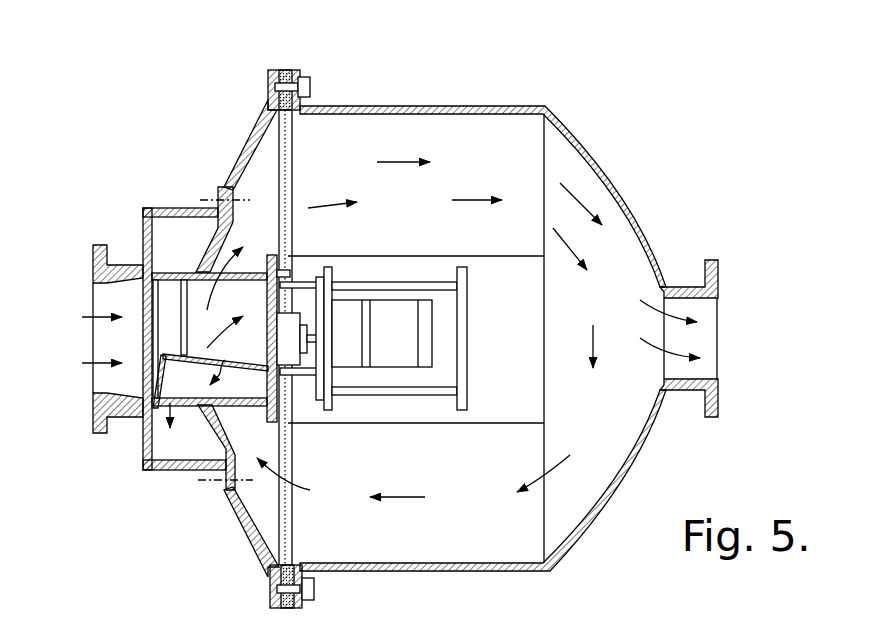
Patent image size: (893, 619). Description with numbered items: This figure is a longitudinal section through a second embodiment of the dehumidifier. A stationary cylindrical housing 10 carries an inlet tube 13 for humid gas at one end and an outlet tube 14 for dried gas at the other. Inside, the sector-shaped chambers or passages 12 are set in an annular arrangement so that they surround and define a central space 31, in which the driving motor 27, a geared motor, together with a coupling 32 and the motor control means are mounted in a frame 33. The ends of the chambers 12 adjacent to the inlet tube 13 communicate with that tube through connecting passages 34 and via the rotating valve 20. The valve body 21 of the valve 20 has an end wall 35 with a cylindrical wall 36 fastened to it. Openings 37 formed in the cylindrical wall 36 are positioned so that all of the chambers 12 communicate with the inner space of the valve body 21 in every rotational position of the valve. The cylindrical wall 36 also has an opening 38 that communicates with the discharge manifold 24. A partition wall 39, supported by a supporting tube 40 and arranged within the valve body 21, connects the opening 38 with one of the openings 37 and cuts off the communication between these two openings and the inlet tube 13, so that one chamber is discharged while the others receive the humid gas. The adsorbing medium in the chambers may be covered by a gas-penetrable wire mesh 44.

The housing 10 is at (507, 108).
The sector-shaped chambers 12 is at (428, 137).
The inlet tube 13 is at (117, 265).
The outlet tube 14 is at (690, 287).
The rotating valve 20 is at (177, 420).
The valve body 21 is at (203, 420).
The discharge manifold 24 is at (188, 273).
The driving motor 27 is at (382, 312).
The central space 31 is at (367, 415).
The coupling 32 is at (296, 322).
The frame 33 is at (428, 290).
The connecting passages 34 is at (255, 155).
The end wall 35 is at (268, 303).
The cylindrical wall 36 is at (160, 210).
The openings 37 is at (222, 200).
The opening 38 is at (145, 463).
The partition wall 39 is at (137, 410).
The supporting tube 40 is at (172, 273).
The wire mesh 44 is at (278, 137).